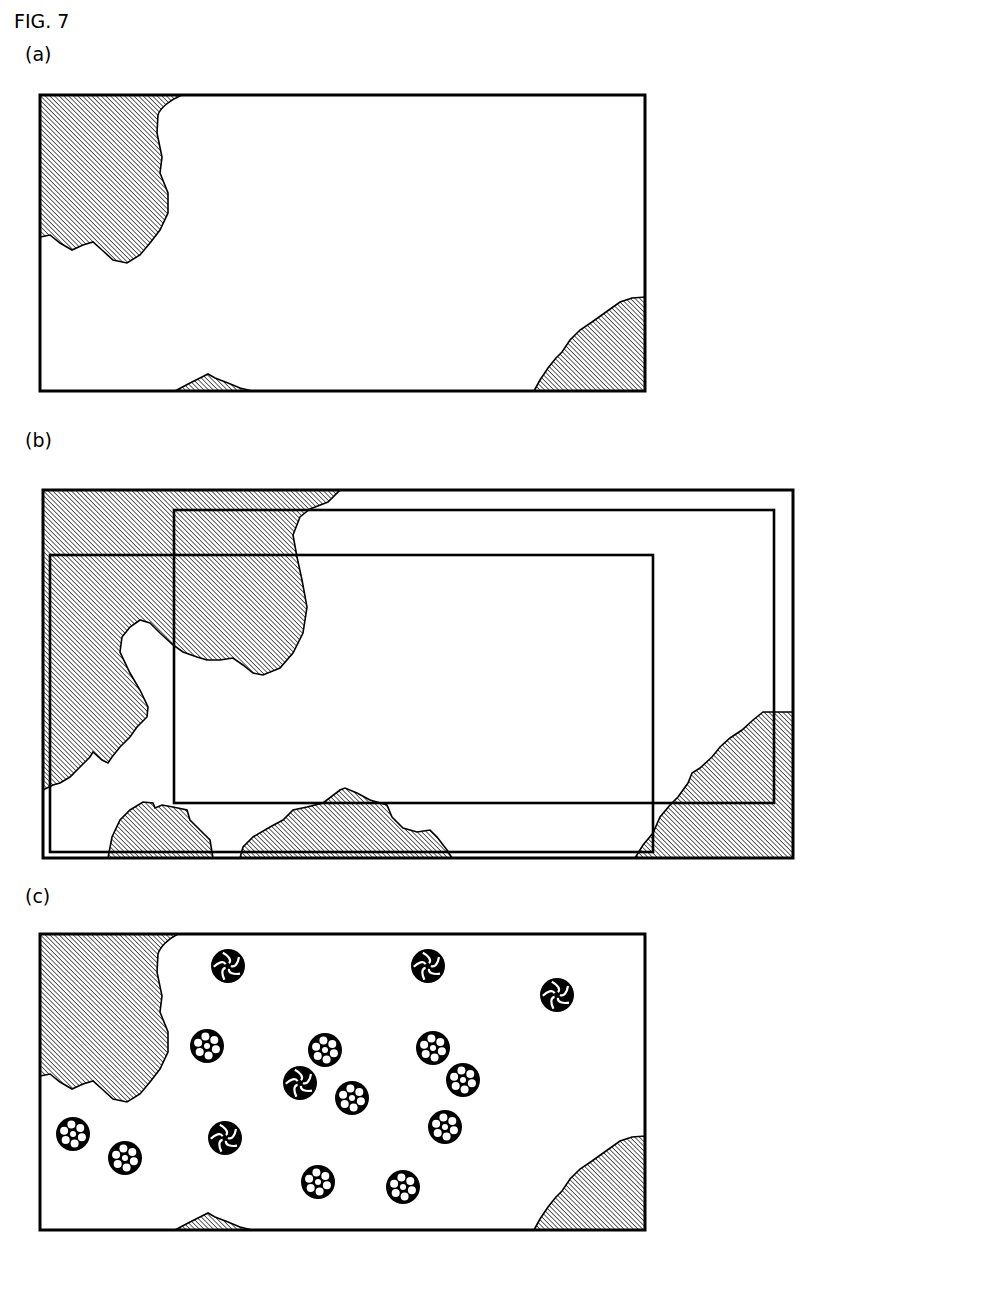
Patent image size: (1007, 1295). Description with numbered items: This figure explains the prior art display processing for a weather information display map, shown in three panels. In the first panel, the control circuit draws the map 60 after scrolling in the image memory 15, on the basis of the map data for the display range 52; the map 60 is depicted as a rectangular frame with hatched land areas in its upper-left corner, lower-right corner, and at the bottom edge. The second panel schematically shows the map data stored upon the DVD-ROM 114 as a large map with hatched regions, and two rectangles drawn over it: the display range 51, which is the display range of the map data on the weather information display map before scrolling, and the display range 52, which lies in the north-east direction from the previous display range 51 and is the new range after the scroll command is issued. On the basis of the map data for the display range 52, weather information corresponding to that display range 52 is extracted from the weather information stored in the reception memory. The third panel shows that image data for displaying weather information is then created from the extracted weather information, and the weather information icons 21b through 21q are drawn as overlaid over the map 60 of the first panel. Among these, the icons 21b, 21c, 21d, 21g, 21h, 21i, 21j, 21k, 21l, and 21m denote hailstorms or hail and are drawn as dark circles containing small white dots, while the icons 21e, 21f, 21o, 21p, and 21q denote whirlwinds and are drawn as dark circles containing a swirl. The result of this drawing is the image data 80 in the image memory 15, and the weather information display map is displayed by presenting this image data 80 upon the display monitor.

The image memory 15 is at (368, 632).
The map 60 is at (620, 130).
The DVD-ROM 114 is at (418, 647).
The display range 51 is at (126, 555).
The display range 52 is at (226, 510).
The image data 80 is at (615, 967).
The icon 21b is at (90, 1134).
The icon 21c is at (142, 1158).
The icon 21d is at (224, 1046).
The icon 21e is at (242, 1138).
The icon 21f is at (283, 1085).
The icon 21g is at (301, 1182).
The icon 21h is at (342, 1050).
The icon 21i is at (369, 1098).
The icon 21j is at (420, 1187).
The icon 21k is at (462, 1127).
The icon 21l is at (450, 1048).
The icon 21m is at (480, 1080).
The icon 21o is at (245, 966).
The icon 21p is at (445, 966).
The icon 21q is at (574, 995).